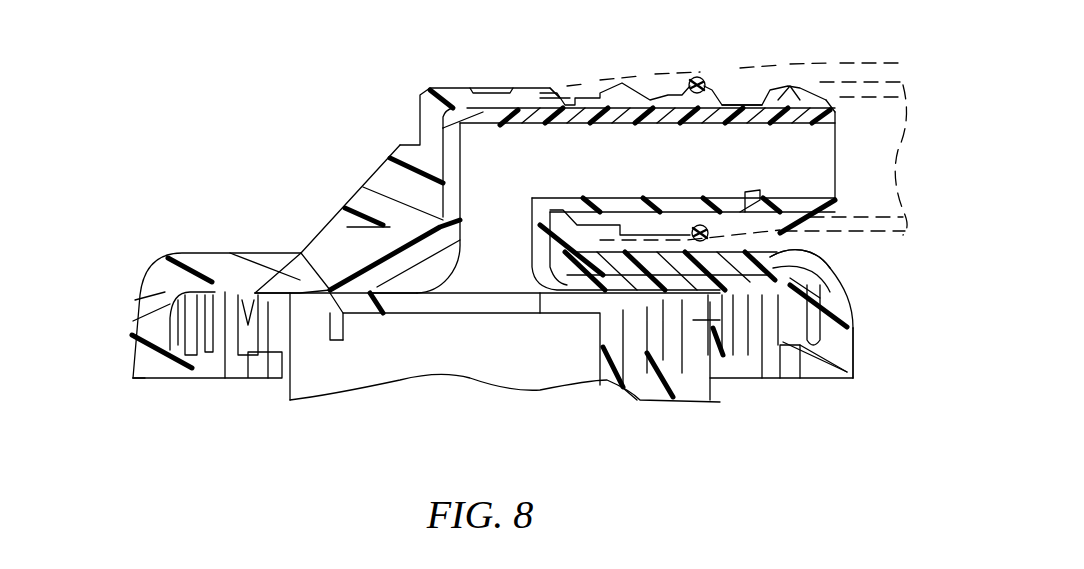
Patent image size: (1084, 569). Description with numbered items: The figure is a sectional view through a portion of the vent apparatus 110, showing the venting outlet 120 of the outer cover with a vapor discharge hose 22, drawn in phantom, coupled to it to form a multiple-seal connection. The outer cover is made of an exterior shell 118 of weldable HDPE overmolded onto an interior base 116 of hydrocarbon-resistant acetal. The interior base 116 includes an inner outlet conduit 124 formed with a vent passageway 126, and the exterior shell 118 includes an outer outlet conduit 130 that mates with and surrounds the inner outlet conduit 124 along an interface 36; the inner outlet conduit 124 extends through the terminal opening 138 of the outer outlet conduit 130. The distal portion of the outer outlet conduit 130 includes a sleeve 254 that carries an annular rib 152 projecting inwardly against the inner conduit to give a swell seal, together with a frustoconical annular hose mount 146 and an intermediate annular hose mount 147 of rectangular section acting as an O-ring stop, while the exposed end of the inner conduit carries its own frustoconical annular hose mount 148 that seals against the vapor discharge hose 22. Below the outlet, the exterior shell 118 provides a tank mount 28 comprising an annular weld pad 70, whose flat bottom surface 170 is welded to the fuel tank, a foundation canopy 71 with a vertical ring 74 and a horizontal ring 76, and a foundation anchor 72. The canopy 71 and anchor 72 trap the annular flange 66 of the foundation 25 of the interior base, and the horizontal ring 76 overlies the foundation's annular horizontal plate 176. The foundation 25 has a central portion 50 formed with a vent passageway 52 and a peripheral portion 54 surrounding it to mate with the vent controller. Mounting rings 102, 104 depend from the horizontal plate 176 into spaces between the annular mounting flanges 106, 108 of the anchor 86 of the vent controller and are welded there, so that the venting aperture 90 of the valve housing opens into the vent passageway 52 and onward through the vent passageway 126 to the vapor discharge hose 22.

The vapor discharge hose 22 is at (860, 84).
The foundation 25 is at (462, 272).
The tank mount 28 is at (360, 180).
The interface 36 is at (454, 174).
The central portion 50 is at (412, 284).
The vent passageway 52 is at (522, 246).
The peripheral portion 54 is at (820, 255).
The annular flange 66 is at (147, 322).
The annular weld pad 70 is at (172, 372).
The foundation canopy 71 is at (122, 346).
The foundation anchor 72 is at (193, 350).
The vertical ring 74 is at (143, 323).
The horizontal ring 76 is at (250, 253).
The anchor 86 is at (296, 336).
The venting aperture 90 is at (537, 305).
The mounting ring 102 is at (248, 350).
The mounting ring 104 is at (230, 342).
The annular mounting flange 106 is at (344, 340).
The annular mounting flange 108 is at (247, 348).
The vent apparatus 110 is at (286, 104).
The interior base 116 is at (357, 258).
The exterior shell 118 is at (200, 246).
The venting outlet 120 is at (535, 70).
The inner outlet conduit 124 is at (628, 124).
The vent passageway 126 is at (550, 152).
The outer outlet conduit 130 is at (533, 108).
The terminal opening 138 is at (756, 102).
The frustoconical annular hose mount 146 is at (628, 88).
The intermediate annular hose mount 147 is at (678, 80).
The frustoconical annular hose mount 148 is at (768, 108).
The annular rib 152 is at (752, 204).
The flat bottom surface 170 is at (143, 380).
The annular horizontal plate 176 is at (250, 295).
The sleeve 254 is at (574, 106).